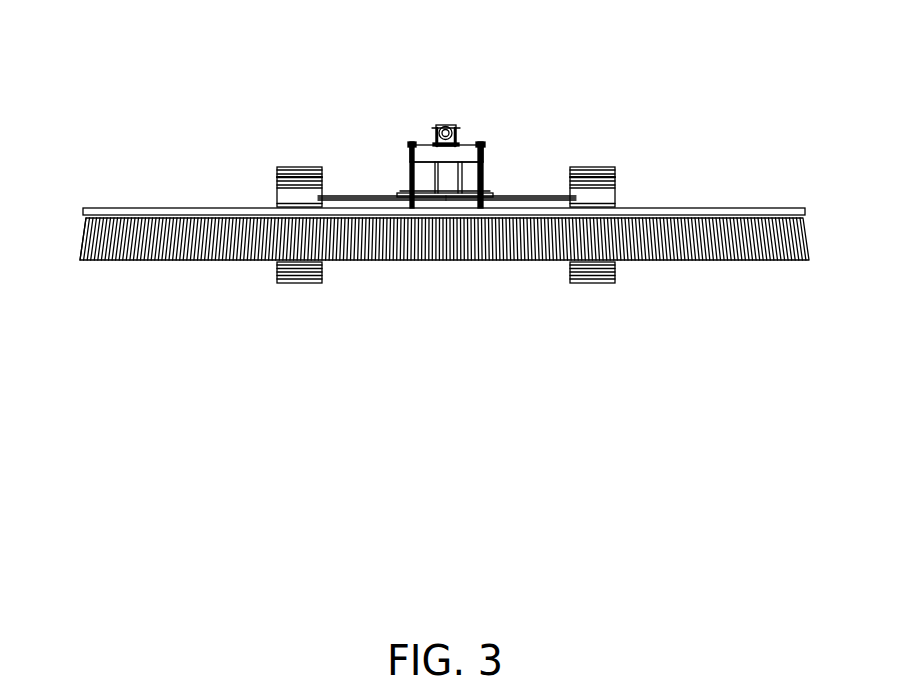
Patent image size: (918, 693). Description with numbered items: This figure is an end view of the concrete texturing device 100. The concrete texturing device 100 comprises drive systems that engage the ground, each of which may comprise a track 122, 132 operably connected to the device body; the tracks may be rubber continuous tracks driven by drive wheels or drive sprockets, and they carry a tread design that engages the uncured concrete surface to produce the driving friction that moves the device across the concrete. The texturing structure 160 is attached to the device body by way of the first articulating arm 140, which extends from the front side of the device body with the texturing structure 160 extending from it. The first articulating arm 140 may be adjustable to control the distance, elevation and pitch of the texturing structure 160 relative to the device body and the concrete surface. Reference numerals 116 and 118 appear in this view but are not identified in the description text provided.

The concrete texturing device 100 is at (110, 64).
The second roller assembly 116 is at (580, 200).
The first roller assembly 118 is at (312, 200).
The track 122 is at (292, 191).
The track 132 is at (600, 190).
The first articulating arm 140 is at (467, 151).
The texturing structure 160 is at (742, 207).